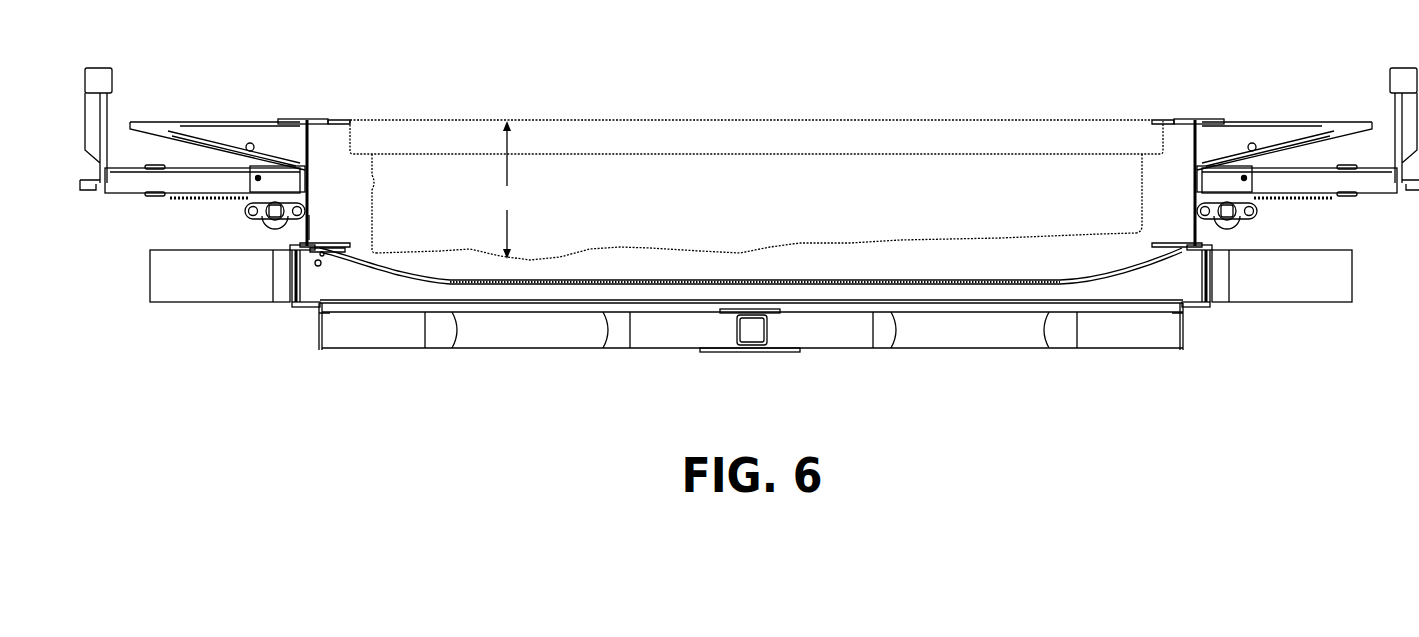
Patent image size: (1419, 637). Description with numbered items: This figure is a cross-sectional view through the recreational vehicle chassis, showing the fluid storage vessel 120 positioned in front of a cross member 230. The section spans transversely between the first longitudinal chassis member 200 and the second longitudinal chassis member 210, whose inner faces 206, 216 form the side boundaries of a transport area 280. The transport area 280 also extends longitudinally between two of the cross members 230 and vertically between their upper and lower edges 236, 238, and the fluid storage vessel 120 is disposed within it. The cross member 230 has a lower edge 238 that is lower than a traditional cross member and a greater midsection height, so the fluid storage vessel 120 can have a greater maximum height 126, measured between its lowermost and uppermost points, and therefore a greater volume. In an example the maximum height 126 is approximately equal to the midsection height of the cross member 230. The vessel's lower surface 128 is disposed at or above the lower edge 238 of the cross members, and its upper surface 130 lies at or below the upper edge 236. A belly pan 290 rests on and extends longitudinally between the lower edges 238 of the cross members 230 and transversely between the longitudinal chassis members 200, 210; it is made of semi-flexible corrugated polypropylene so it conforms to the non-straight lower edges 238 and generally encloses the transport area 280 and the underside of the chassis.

The fluid storage vessel 120 is at (1140, 187).
The maximum height 126 is at (507, 190).
The lower surface 128 is at (533, 263).
The upper surface 130 is at (589, 120).
The first longitudinal chassis member 200 is at (300, 230).
The inner face 206 is at (303, 213).
The second longitudinal chassis member 210 is at (1206, 230).
The inner face 216 is at (1140, 240).
The cross member 230 is at (333, 162).
The upper edge 236 is at (1173, 120).
The lower edge 238 is at (1013, 283).
The transport area 280 is at (355, 230).
The belly pan 290 is at (667, 283).